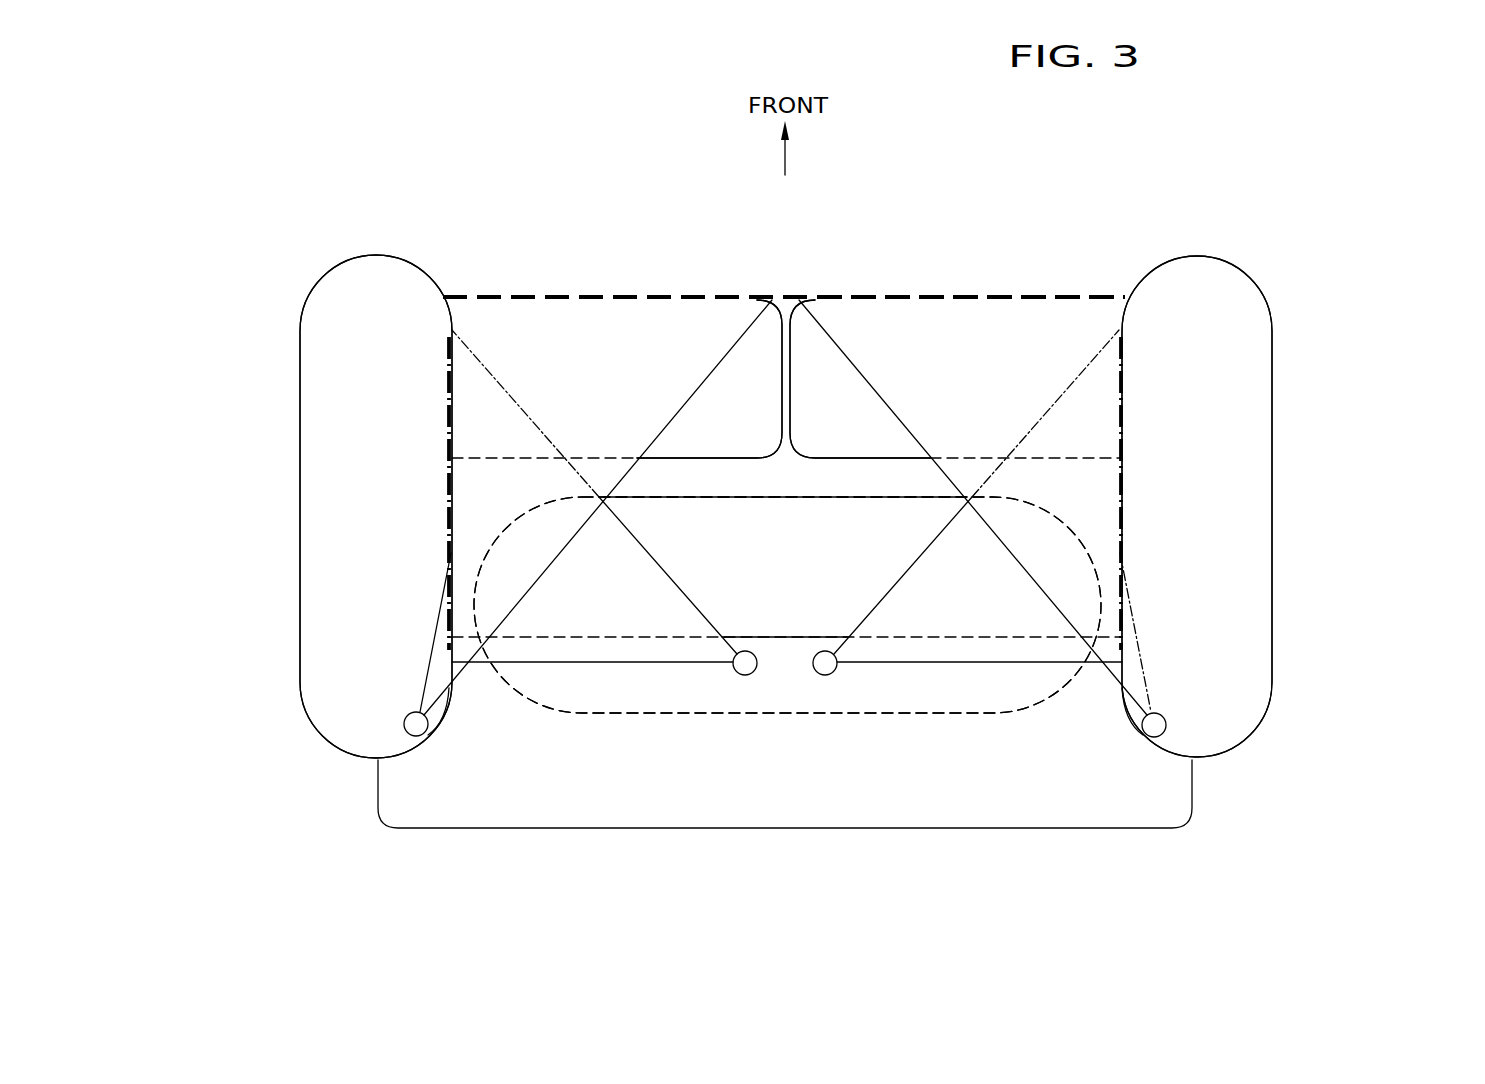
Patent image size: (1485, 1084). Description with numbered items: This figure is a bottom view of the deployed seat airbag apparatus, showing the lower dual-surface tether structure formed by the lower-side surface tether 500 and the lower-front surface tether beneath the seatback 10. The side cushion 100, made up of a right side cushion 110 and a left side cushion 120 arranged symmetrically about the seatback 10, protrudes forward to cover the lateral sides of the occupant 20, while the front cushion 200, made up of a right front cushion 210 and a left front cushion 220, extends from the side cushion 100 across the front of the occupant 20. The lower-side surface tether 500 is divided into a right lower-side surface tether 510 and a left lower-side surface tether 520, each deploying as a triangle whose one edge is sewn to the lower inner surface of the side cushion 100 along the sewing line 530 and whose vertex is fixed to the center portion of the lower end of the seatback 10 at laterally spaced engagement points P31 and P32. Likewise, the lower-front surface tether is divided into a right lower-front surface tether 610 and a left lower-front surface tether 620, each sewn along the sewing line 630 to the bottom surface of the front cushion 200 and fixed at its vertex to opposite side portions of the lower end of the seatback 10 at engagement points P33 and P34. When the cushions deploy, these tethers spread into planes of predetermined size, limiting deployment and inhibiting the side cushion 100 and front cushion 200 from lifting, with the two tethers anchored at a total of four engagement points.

The seatback 10 is at (908, 810).
The occupant 20 is at (701, 713).
The side cushion 100 is at (786, 506).
The right side cushion 110 is at (1251, 545).
The left side cushion 120 is at (320, 545).
The front cushion 200 is at (783, 379).
The right front cushion 210 is at (808, 400).
The left front cushion 220 is at (763, 400).
The lower-side surface tether 500 is at (787, 605).
The right lower-side surface tether 510 is at (1020, 597).
The left lower-side surface tether 520 is at (583, 598).
The sewing line 530 is at (449, 421).
The right lower-front surface tether 610 is at (1043, 322).
The left lower-front surface tether 620 is at (518, 322).
The sewing line 630 is at (600, 297).
The engagement point P31 is at (826, 675).
The engagement point P32 is at (746, 675).
The engagement point P33 is at (1152, 737).
The engagement point P34 is at (419, 736).